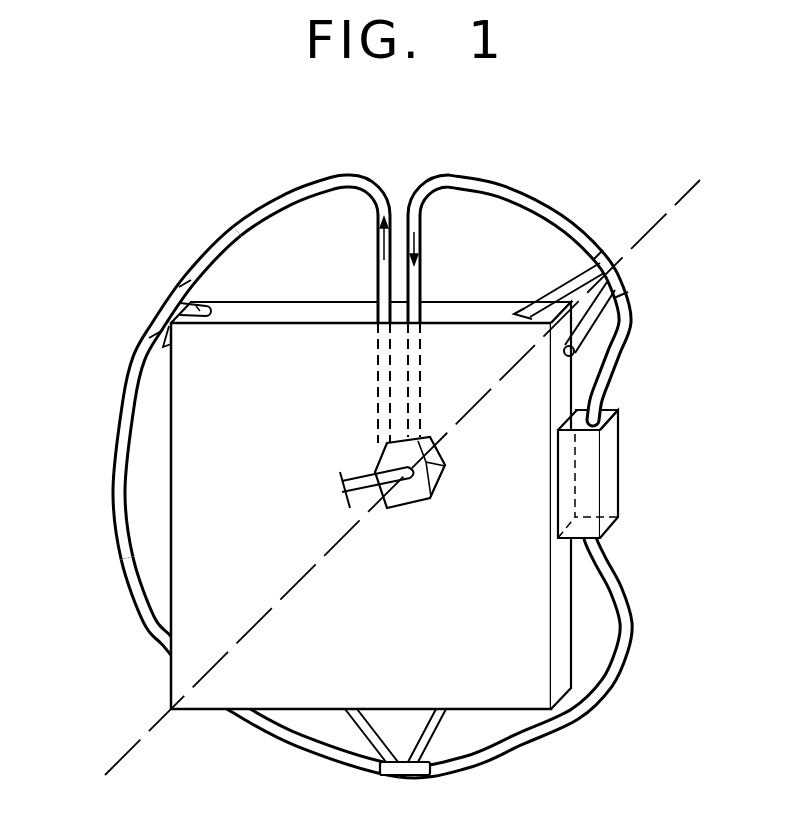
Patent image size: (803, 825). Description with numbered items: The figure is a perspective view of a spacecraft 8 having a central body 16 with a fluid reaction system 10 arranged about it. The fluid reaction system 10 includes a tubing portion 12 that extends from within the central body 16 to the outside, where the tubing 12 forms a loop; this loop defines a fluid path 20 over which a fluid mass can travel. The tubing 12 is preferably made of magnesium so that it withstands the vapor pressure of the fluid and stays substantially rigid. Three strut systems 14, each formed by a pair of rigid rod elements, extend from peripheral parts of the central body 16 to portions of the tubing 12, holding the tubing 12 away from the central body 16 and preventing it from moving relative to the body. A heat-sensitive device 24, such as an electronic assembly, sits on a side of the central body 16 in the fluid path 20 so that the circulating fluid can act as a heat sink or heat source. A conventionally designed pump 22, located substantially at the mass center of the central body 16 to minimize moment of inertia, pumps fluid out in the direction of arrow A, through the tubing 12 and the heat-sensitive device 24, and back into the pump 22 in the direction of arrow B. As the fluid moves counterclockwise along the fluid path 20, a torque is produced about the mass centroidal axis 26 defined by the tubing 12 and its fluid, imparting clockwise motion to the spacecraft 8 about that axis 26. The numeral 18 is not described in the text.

The spacecraft 8 is at (479, 154).
The fluid reaction system 10 is at (320, 179).
The tubing portion 12 is at (121, 554).
The strut systems 14 is at (192, 305).
The central body 16 is at (258, 450).
The plate edge 18 is at (171, 437).
The fluid path 20 is at (150, 612).
The pump 22 is at (385, 512).
The heat-sensitive device 24 is at (620, 481).
The mass centroidal axis 26 is at (152, 731).